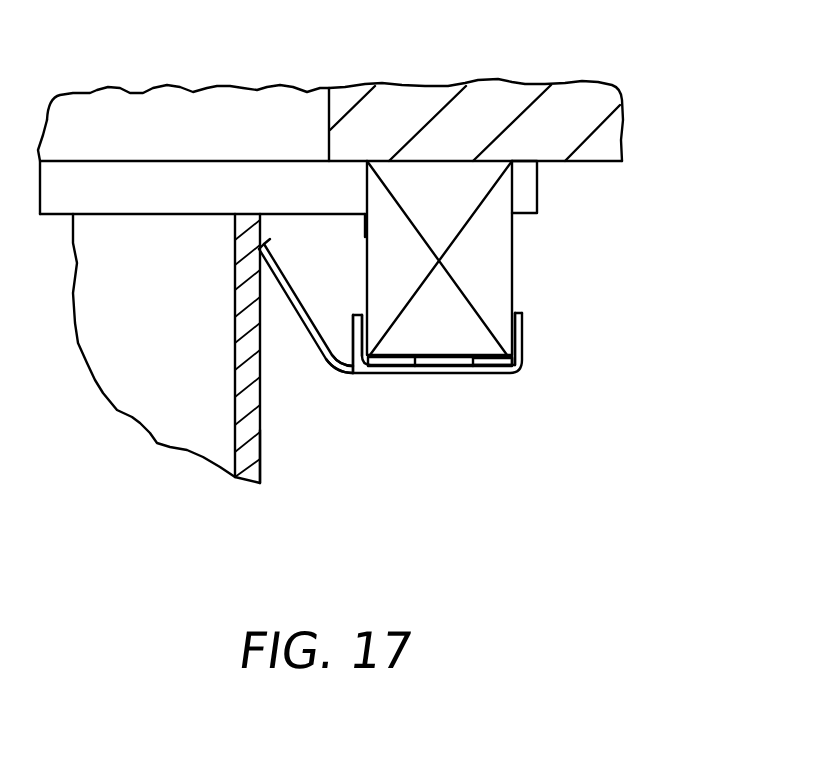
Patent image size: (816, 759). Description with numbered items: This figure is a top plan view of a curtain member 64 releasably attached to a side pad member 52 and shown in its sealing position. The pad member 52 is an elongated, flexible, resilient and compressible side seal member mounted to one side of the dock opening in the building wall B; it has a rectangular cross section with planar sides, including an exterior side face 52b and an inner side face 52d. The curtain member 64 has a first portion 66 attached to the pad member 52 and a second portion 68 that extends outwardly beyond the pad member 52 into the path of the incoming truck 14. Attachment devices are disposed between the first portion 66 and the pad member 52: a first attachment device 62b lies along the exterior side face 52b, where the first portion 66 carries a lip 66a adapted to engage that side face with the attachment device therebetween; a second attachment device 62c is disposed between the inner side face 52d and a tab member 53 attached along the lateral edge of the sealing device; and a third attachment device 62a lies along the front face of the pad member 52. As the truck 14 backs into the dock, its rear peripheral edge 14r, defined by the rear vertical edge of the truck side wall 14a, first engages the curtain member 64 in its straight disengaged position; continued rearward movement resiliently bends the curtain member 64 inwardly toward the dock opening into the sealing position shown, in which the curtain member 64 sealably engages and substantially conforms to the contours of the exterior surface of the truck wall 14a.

The truck 14 is at (117, 462).
The rear peripheral edge 14r is at (255, 218).
The side wall 14a is at (303, 502).
The building wall B is at (667, 112).
The pad member 52 is at (590, 255).
The exterior side face 52b is at (590, 223).
The inner side face 52d is at (364, 234).
The tab member 53 is at (360, 352).
The third attachment device 62a is at (413, 425).
The first attachment device 62b is at (597, 323).
The left lip of clip 62c is at (364, 323).
The curtain member 64 is at (330, 433).
The first portion 66 is at (497, 433).
The lip 66a is at (597, 357).
The second portion 68 is at (276, 388).